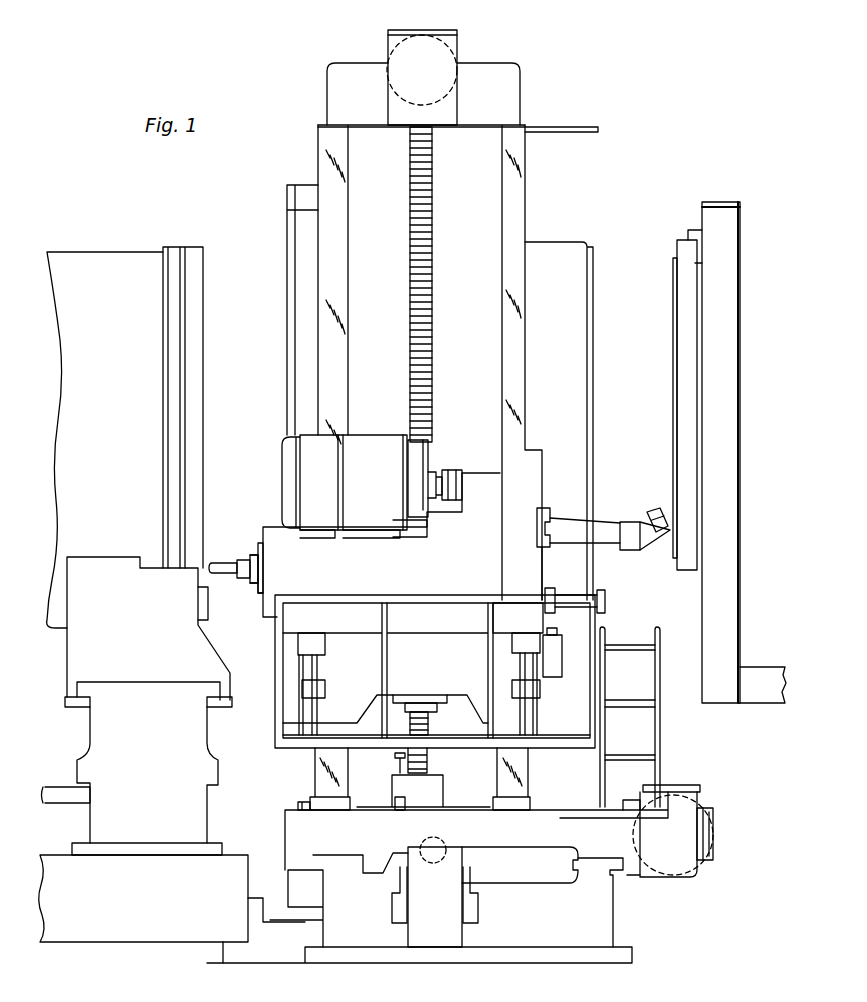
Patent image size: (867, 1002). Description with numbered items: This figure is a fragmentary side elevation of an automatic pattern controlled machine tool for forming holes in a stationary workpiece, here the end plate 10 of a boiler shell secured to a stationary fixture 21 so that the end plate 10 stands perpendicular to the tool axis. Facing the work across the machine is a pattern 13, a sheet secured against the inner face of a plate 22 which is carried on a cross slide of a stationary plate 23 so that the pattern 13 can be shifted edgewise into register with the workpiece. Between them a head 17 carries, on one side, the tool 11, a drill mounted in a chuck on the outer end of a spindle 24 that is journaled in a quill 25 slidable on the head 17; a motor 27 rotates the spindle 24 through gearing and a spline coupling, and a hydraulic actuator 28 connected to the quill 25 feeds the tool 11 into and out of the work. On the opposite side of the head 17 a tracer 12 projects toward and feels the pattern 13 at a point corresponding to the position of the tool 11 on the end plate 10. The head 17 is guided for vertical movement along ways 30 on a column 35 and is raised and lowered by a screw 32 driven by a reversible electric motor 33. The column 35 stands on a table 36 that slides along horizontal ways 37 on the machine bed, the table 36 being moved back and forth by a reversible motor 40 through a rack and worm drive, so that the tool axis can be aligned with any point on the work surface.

The end plate 10 is at (203, 388).
The tool 11 is at (222, 563).
The tracer 12 is at (656, 509).
The pattern 13 is at (672, 465).
The head 17 is at (276, 527).
The fixture 21 is at (195, 727).
The plate 22 is at (683, 422).
The stationary plate 23 is at (740, 438).
The spindle 24 is at (256, 590).
The quill 25 is at (259, 604).
The motor 27 is at (282, 452).
The hydraulic actuator 28 is at (595, 596).
The ways 30 is at (318, 166).
The screw 32 is at (432, 212).
The reversible electric motor 33 is at (457, 38).
The column 35 is at (490, 182).
The table 36 is at (298, 828).
The horizontal ways 37 is at (318, 868).
The reversible motor 40 is at (700, 800).